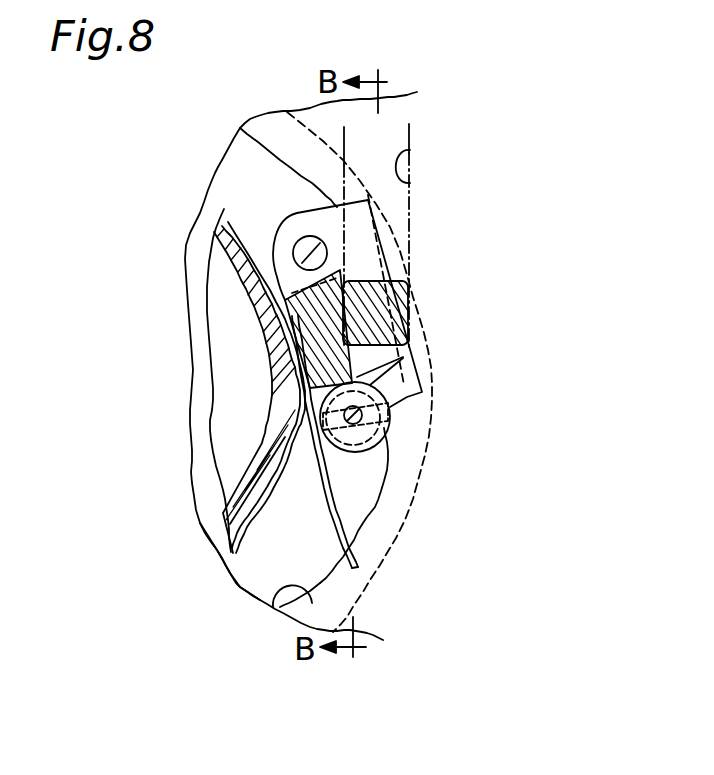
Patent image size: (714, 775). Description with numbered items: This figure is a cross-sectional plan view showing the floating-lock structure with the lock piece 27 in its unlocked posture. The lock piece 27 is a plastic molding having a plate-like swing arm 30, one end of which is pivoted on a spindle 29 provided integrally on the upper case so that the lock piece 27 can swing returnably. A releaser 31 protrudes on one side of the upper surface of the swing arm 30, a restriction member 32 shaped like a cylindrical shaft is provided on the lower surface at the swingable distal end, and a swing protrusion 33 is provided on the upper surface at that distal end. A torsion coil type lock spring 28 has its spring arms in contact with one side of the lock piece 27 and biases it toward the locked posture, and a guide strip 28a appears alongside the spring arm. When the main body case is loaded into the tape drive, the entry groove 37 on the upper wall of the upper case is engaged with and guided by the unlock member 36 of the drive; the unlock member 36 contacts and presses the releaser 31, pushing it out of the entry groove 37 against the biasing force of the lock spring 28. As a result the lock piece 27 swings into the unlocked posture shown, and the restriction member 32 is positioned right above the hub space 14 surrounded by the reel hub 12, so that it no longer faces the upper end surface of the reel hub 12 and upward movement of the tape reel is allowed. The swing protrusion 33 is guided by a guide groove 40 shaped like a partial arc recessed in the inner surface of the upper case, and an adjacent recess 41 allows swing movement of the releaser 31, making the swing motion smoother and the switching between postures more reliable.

The reel hub 12 is at (280, 607).
The hub space 14 is at (258, 572).
The lock piece 27 is at (395, 215).
The lock spring 28 is at (232, 250).
The guide strip 28a is at (327, 507).
The spindle 29 is at (307, 242).
The swing arm 30 is at (413, 353).
The releaser 31 is at (313, 349).
The restriction member 32 is at (393, 433).
The swing protrusion 33 is at (338, 452).
The unlock member 36 is at (405, 302).
The entry groove 37 is at (412, 152).
The guide groove 40 is at (410, 403).
The recess 41 is at (275, 360).